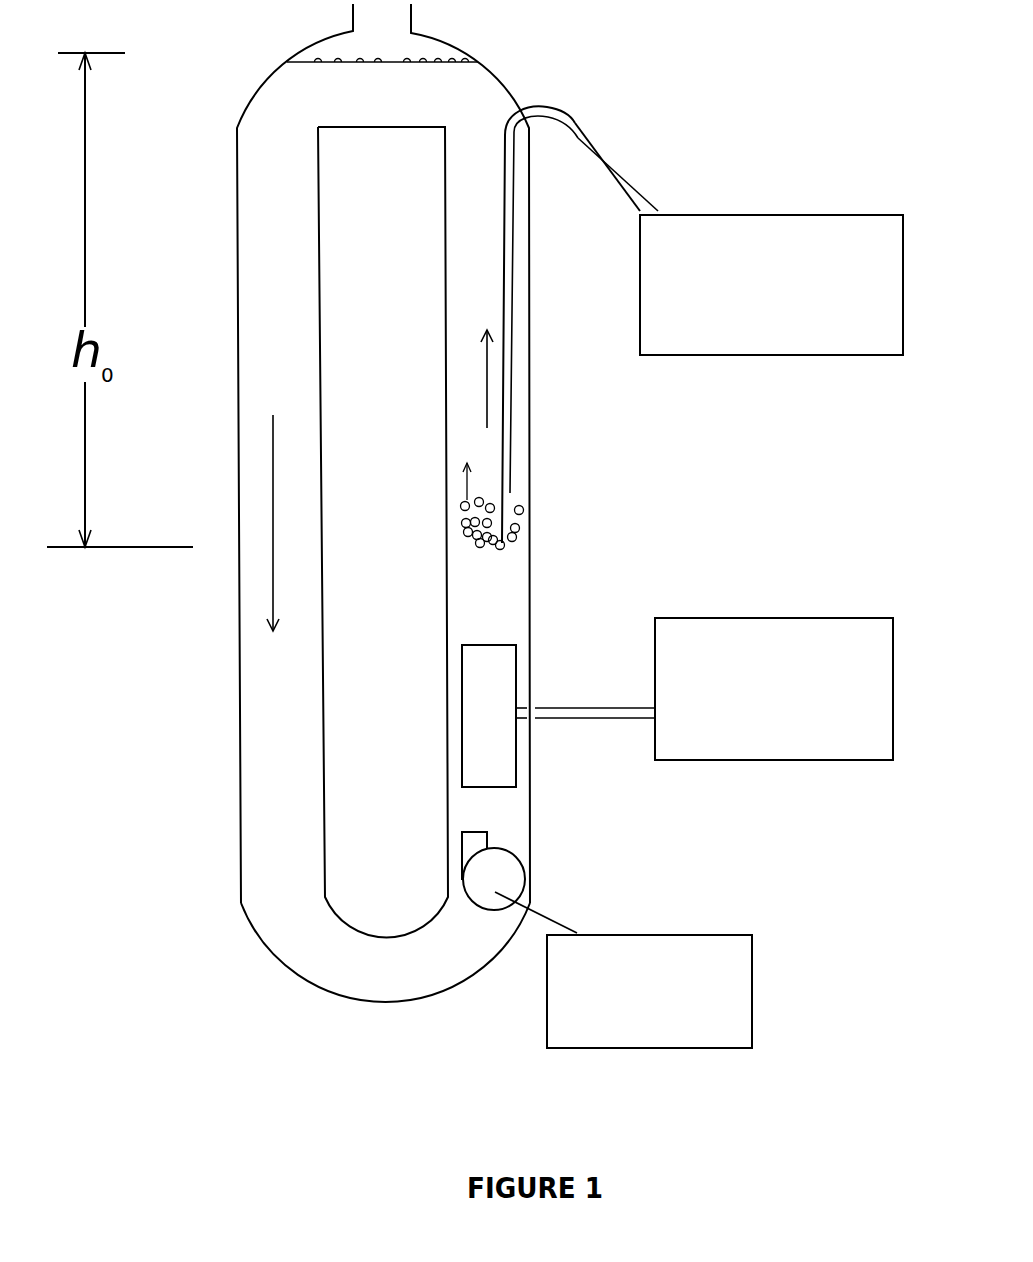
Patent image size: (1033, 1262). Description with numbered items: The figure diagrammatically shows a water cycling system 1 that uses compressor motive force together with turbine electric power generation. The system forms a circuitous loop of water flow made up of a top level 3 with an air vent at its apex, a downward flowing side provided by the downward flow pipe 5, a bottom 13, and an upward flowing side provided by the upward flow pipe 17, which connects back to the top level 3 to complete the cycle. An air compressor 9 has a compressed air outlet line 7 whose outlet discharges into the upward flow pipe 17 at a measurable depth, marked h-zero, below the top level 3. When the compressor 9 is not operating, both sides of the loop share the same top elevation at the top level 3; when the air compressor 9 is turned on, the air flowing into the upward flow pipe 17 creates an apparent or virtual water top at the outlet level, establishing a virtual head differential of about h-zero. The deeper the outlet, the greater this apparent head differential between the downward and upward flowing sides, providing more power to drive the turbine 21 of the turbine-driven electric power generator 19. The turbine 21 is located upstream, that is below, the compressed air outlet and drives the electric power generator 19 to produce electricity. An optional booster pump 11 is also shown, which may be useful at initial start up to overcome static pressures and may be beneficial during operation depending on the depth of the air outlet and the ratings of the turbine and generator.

The water cycling system 1 is at (218, 120).
The top level 3 is at (455, 85).
The downward flow pipe 5 is at (265, 232).
The compressed air outlet line 7 is at (608, 167).
The air compressor 9 is at (787, 215).
The optional booster pump 11 is at (697, 935).
The bottom 13 is at (302, 956).
The upward flow pipe 17 is at (530, 453).
The turbine-driven electric power generator 19 is at (743, 618).
The turbine 21 is at (504, 748).